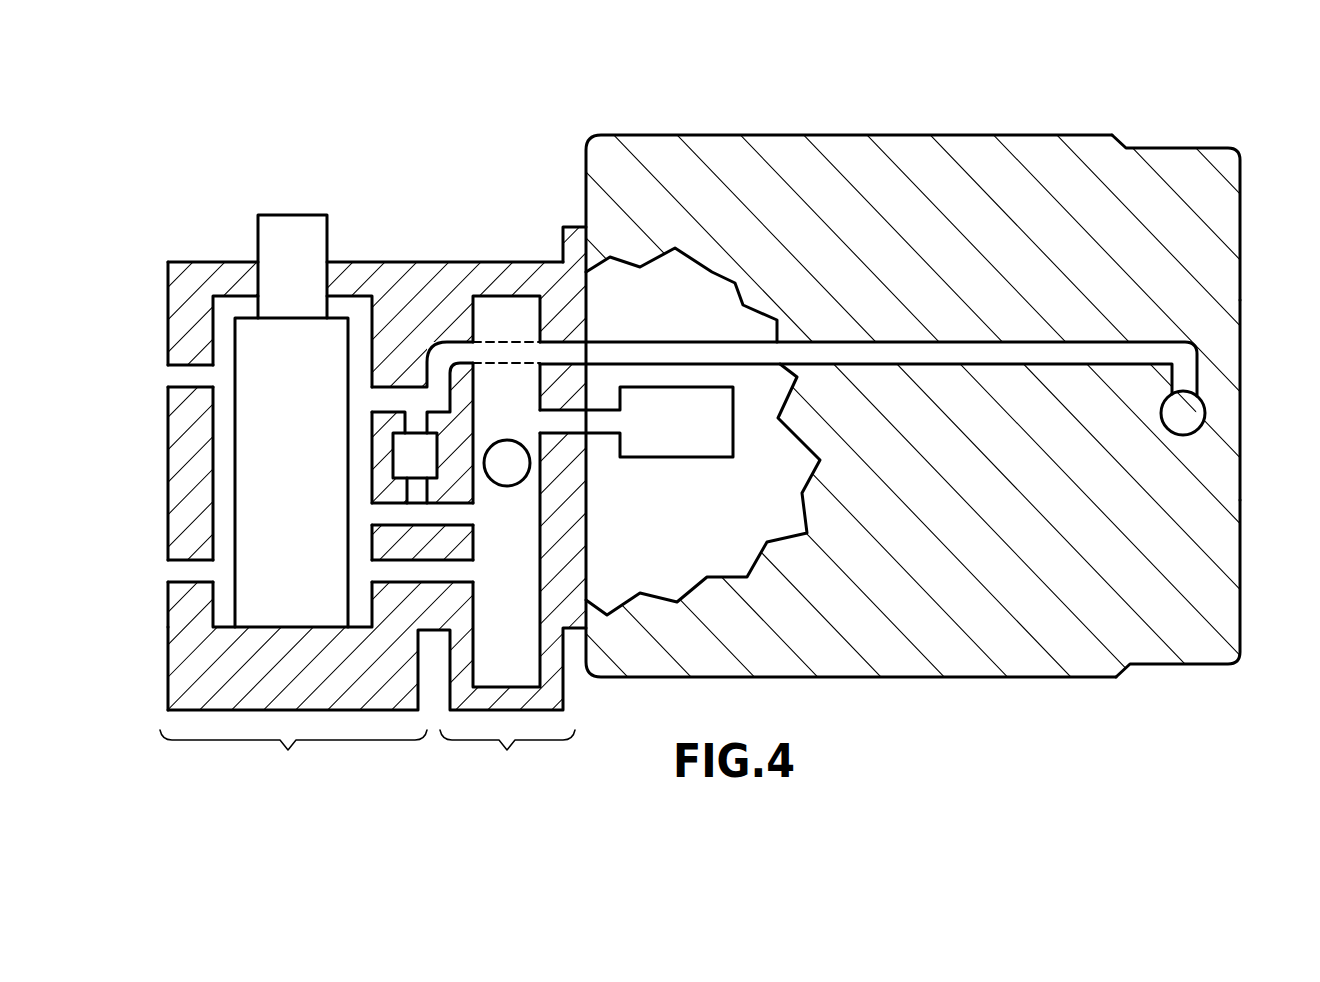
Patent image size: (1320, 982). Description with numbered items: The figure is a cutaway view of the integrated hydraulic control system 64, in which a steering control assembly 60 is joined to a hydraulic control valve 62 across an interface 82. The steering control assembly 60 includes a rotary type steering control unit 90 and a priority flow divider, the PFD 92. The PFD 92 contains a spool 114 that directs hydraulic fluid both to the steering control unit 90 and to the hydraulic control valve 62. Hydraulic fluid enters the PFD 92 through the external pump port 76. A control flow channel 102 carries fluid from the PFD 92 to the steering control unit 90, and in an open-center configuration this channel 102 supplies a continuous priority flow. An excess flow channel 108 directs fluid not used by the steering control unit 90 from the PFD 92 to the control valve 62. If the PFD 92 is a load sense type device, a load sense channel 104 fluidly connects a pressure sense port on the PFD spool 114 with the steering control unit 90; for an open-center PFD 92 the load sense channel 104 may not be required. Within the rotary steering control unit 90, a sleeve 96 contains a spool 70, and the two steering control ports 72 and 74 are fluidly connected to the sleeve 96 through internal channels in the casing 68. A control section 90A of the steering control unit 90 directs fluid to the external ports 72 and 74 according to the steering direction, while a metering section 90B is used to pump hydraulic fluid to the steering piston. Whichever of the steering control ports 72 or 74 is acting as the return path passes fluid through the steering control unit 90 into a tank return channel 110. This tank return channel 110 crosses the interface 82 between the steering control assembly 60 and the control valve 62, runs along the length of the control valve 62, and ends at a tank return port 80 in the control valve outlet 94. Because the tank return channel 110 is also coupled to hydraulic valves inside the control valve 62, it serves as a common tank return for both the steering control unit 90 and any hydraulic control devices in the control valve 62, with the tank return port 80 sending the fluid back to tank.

The steering control assembly 60 is at (543, 434).
The hydraulic control valve 62 is at (697, 423).
The integrated hydraulic control system 64 is at (1118, 704).
The casing 68 is at (165, 699).
The spool 70 is at (293, 215).
The steering control port 72 is at (176, 377).
The steering control port 74 is at (176, 570).
The external pump port 76 is at (515, 470).
The tank return port 80 is at (1207, 405).
The interface 82 is at (565, 217).
The steering control unit 90 is at (293, 758).
The control section 90A is at (168, 300).
The metering section 90B is at (168, 660).
The PFD (priority flow divider) 92 is at (507, 758).
The control valve outlet 94 is at (1180, 148).
The sleeve 96 is at (222, 452).
The control flow channel 102 is at (457, 515).
The load sense channel 104 is at (457, 570).
The excess flow channel 108 is at (595, 422).
The tank return channel 110 is at (447, 350).
The spool 114 is at (507, 320).